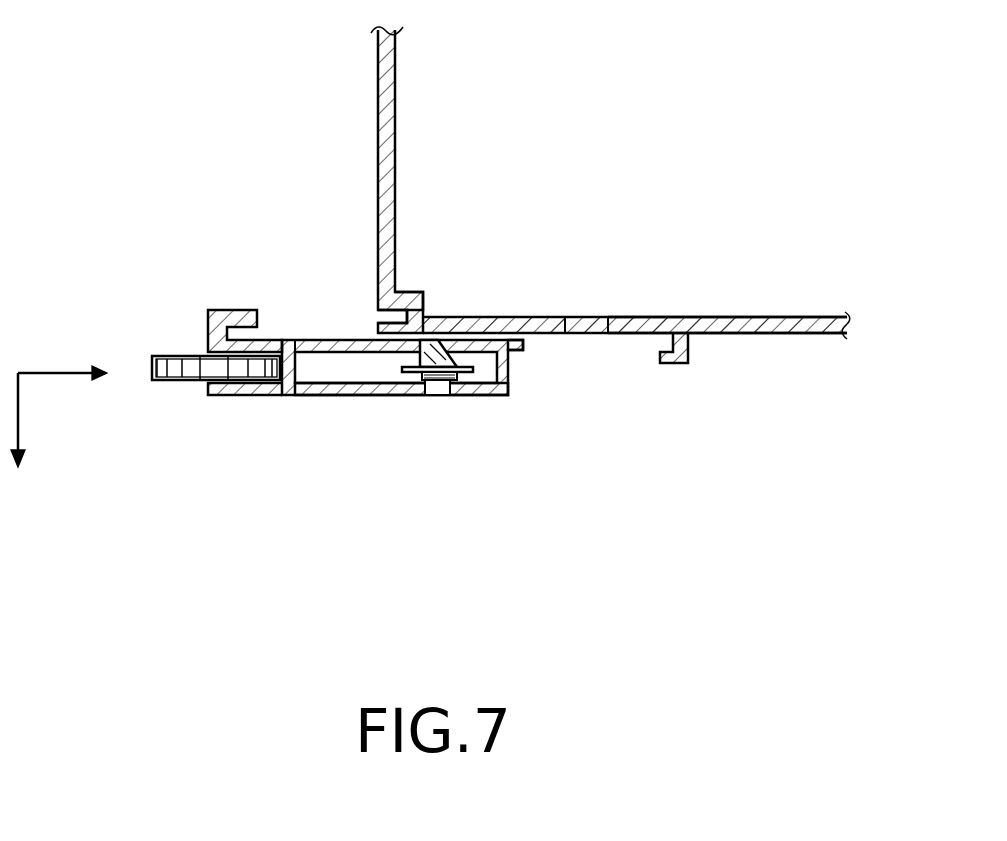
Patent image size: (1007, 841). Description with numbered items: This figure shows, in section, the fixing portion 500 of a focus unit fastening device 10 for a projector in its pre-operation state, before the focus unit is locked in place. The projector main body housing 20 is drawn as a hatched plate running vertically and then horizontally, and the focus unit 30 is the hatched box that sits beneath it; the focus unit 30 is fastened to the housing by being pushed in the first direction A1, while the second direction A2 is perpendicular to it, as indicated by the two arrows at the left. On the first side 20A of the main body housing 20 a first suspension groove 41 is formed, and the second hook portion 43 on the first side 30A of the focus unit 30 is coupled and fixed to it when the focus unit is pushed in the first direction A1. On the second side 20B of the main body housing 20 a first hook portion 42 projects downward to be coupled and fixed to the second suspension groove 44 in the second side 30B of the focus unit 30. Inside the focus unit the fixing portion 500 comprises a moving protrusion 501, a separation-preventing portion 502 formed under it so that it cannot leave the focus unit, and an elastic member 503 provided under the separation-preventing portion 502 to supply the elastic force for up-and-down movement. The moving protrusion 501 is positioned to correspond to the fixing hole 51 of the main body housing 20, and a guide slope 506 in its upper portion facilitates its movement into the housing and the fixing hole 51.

The focus unit fastening device 10 is at (662, 113).
The projector main body housing 20 is at (396, 104).
The first side of the main body housing 20A is at (407, 289).
The second side of the main body housing 20B is at (684, 317).
The focus unit 30 is at (222, 396).
The first side of the focus unit 30A is at (211, 388).
The second side of the focus unit 30B is at (500, 397).
The first suspension groove 41 is at (432, 299).
The first hook portion 42 is at (684, 348).
The second hook portion 43 is at (210, 320).
The second suspension groove 44 is at (521, 351).
The fixing hole 51 is at (595, 316).
The fixing portion 500 is at (483, 531).
The moving protrusion 501 is at (421, 356).
The separation-preventing portion 502 is at (405, 397).
The elastic member 503 is at (435, 397).
The guide slope 506 is at (448, 340).
The first direction A1 is at (53, 370).
The second direction A2 is at (20, 424).